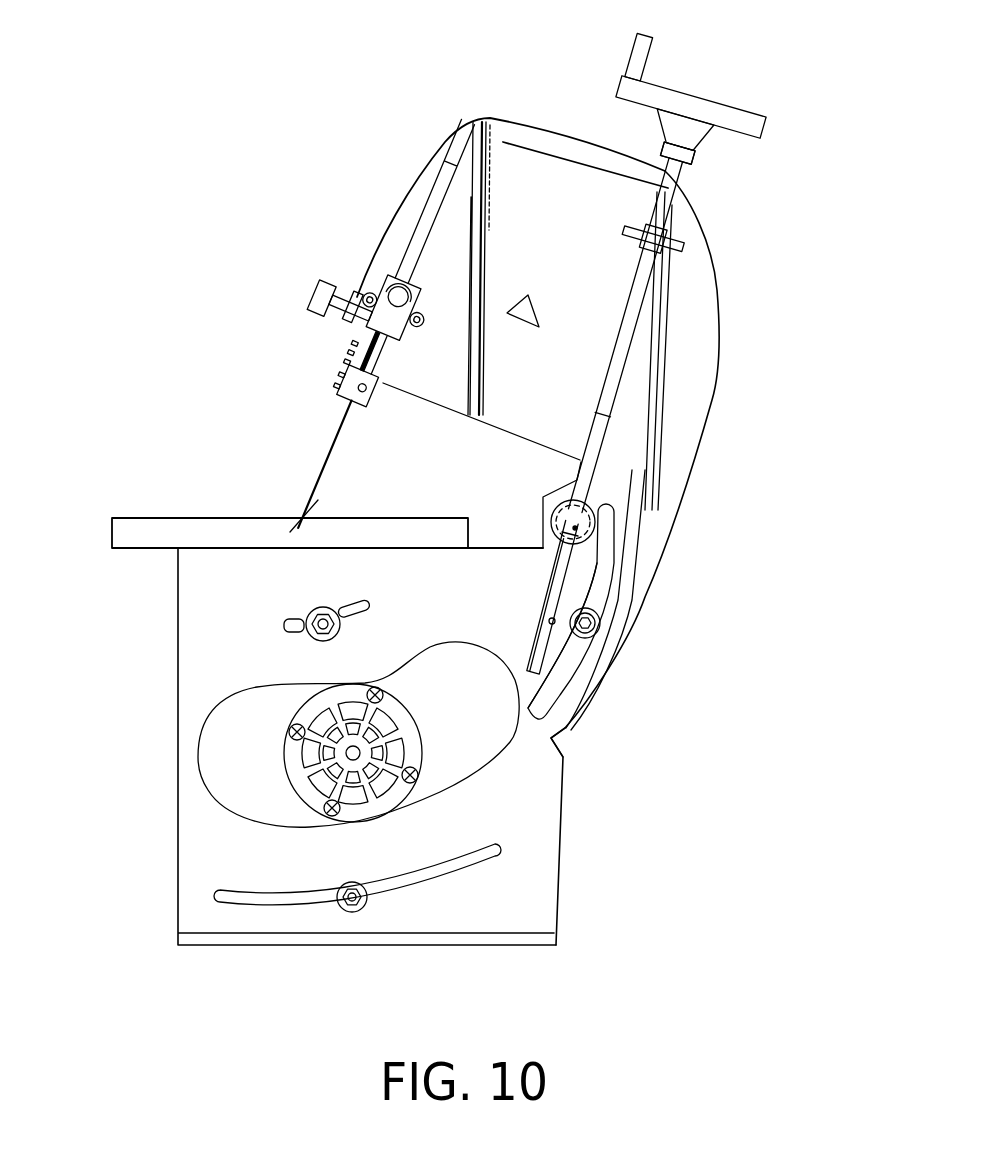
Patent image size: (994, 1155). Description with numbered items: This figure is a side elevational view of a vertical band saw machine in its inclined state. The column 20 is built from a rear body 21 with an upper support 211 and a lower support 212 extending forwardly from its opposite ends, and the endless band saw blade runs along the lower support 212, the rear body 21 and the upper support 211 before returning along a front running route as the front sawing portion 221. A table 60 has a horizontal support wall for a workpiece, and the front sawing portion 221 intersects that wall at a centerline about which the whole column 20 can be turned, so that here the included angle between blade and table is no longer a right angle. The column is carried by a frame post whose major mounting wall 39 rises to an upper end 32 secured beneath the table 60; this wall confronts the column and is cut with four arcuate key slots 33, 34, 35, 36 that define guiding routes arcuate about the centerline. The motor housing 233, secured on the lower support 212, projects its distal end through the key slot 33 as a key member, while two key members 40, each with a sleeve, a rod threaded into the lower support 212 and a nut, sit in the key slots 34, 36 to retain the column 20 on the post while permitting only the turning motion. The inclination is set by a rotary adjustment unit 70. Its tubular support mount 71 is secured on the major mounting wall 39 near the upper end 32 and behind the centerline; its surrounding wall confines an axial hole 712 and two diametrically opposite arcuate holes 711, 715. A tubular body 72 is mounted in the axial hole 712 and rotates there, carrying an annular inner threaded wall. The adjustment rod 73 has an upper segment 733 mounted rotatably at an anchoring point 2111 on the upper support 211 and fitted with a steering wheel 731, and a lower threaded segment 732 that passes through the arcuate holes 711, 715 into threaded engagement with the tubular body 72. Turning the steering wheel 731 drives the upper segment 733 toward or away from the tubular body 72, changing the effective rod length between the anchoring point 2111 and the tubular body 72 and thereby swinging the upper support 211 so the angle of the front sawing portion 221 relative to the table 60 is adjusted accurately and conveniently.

The column 20 is at (722, 264).
The rear body 21 is at (718, 310).
The upper support 211 is at (503, 152).
The anchoring point 2111 is at (686, 236).
The lower support 212 is at (565, 729).
The front sawing portion 221 is at (341, 428).
The motor housing 233 is at (412, 732).
The upper end 32 is at (508, 548).
The key slot 33 is at (208, 808).
The key slot 34 is at (287, 625).
The key slot 35 is at (616, 545).
The key slot 36 is at (490, 860).
The major mounting wall 39 is at (590, 665).
The key member 40 is at (286, 600).
The table 60 is at (108, 511).
The rotary adjustment unit 70 is at (628, 437).
The tubular support mount 71 is at (588, 516).
The arcuate hole 711 is at (598, 492).
The axial hole 712 is at (547, 505).
The arcuate hole 715 is at (602, 617).
The tubular body 72 is at (592, 555).
The adjustment rod 73 is at (648, 313).
The steering wheel 731 is at (690, 100).
The lower threaded segment 732 is at (552, 621).
The upper segment 733 is at (682, 180).